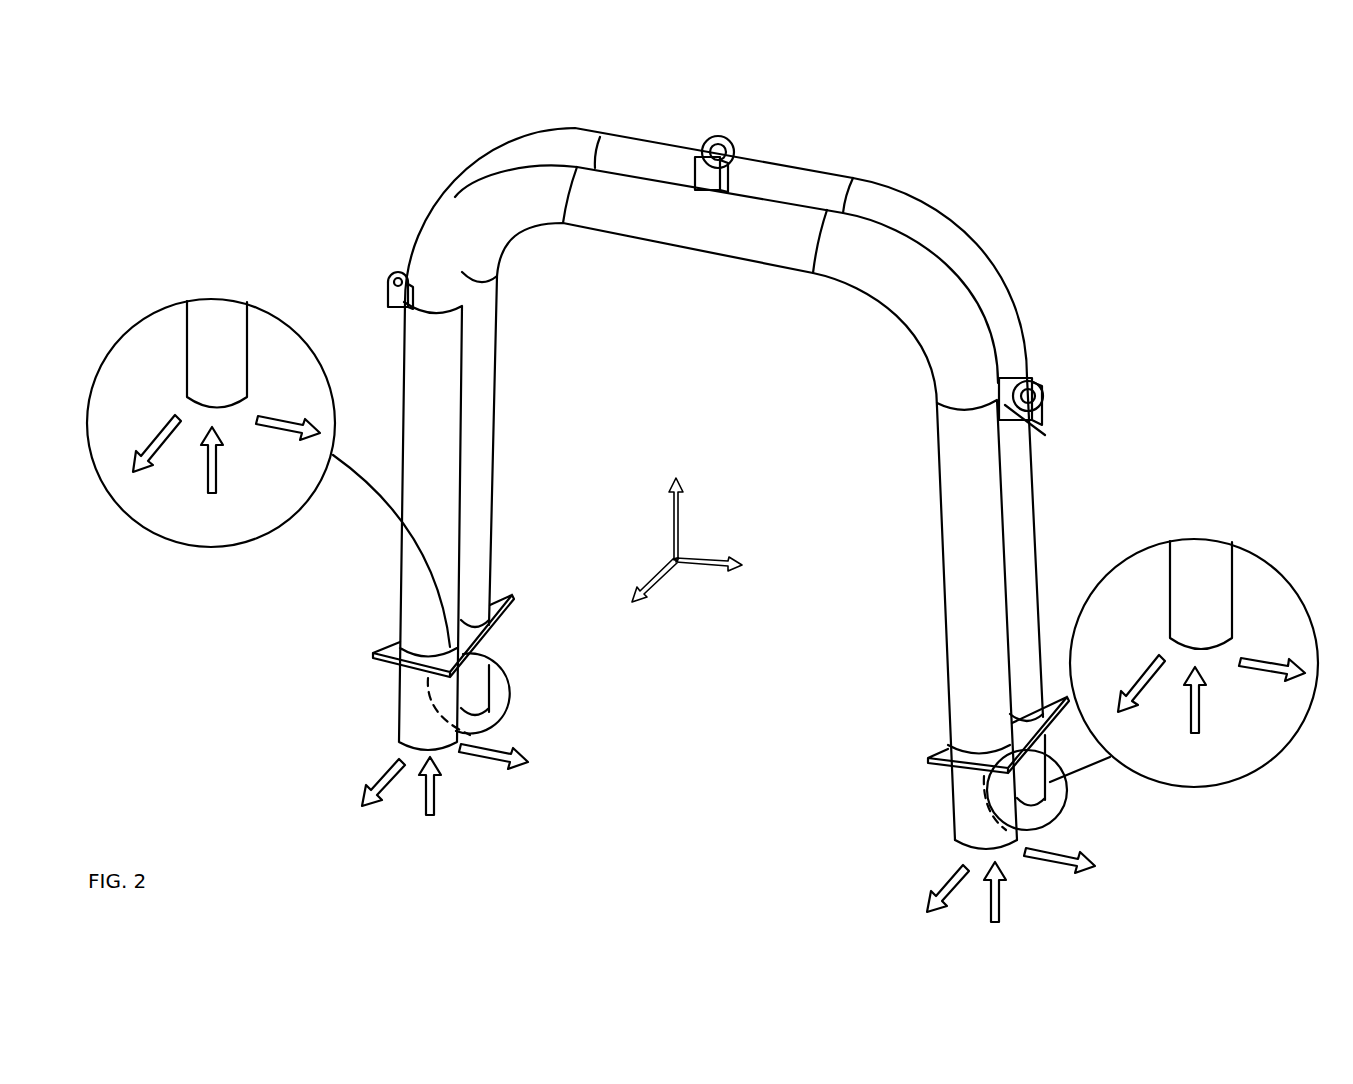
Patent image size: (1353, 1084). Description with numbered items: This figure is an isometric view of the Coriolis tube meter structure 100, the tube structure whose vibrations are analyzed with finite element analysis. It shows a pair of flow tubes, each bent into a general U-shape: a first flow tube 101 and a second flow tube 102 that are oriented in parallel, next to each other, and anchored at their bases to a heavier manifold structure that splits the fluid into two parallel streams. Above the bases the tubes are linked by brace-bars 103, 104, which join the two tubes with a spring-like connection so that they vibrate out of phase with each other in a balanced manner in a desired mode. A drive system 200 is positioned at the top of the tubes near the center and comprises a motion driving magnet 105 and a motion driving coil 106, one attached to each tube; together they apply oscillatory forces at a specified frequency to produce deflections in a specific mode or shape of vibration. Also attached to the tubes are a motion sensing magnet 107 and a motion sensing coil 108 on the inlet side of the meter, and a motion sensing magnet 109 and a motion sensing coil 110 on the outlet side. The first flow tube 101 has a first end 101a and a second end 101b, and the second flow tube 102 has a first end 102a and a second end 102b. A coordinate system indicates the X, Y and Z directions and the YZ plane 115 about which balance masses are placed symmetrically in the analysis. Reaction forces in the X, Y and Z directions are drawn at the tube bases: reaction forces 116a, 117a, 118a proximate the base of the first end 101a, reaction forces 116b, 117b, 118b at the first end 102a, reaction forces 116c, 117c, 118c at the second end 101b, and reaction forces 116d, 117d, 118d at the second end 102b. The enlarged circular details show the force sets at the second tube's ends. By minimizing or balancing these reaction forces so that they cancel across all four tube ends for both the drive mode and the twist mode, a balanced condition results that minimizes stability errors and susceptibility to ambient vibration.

The Coriolis tube meter structure 100 is at (948, 125).
The drive system 200 is at (490, 103).
The first flow tube 101 is at (975, 683).
The first end of the first flow tube 101a is at (403, 708).
The second end of the first flow tube 101b is at (960, 812).
The second flow tube 102 is at (198, 347).
The first end of the second flow tube 102a is at (477, 672).
The second end of the second flow tube 102b is at (1032, 805).
The brace-bar 103 is at (945, 755).
The brace-bar 104 is at (388, 642).
The motion driving magnet 105 is at (700, 150).
The motion driving coil 106 is at (728, 143).
The motion sensing magnet 107 is at (1018, 408).
The motion sensing coil 108 is at (1040, 378).
The motion sensing magnet 109 is at (400, 300).
The motion sensing coil 110 is at (403, 265).
The YZ plane 115 is at (717, 518).
The reaction force 116a is at (500, 740).
The reaction force 116b is at (282, 416).
The reaction force 116c is at (1065, 842).
The reaction force 116d is at (1265, 660).
The reaction force 117a is at (447, 800).
The reaction force 117b is at (220, 470).
The reaction force 117c is at (1010, 905).
The reaction force 117d is at (1205, 710).
The reaction force 118a is at (375, 773).
The reaction force 118b is at (160, 437).
The reaction force 118c is at (940, 877).
The reaction force 118d is at (1142, 678).